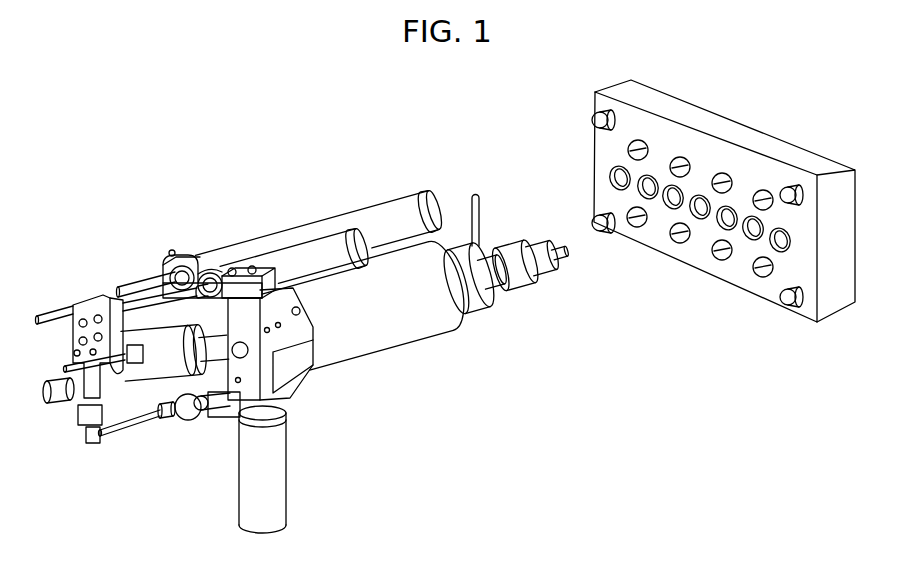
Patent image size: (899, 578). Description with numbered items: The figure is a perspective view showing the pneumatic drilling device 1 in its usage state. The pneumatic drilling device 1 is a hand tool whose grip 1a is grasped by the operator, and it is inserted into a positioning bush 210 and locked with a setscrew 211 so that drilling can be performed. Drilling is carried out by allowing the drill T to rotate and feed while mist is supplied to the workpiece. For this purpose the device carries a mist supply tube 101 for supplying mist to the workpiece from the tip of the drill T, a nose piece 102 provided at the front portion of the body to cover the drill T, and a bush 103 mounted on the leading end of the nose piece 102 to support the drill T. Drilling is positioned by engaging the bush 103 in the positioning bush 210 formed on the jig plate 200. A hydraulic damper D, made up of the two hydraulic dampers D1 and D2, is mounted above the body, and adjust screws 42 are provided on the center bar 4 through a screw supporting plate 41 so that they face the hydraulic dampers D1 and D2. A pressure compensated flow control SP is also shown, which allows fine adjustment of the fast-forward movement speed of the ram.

The pneumatic drilling device 1 is at (218, 203).
The grip 1a is at (277, 493).
The center bar 4 is at (137, 377).
The screw supporting plate 41 is at (72, 333).
The adjust screws 42 is at (163, 282).
The mist supply tube 101 is at (478, 208).
The nose piece 102 is at (380, 337).
The bush 103 is at (555, 257).
The jig plate 200 is at (720, 125).
The positioning bush 210 is at (612, 173).
The setscrew 211 is at (630, 142).
The hydraulic damper D is at (360, 183).
The hydraulic damper D1 is at (340, 225).
The hydraulic damper D2 is at (287, 260).
The pressure compensated flow control SP is at (208, 415).
The drill T is at (573, 250).